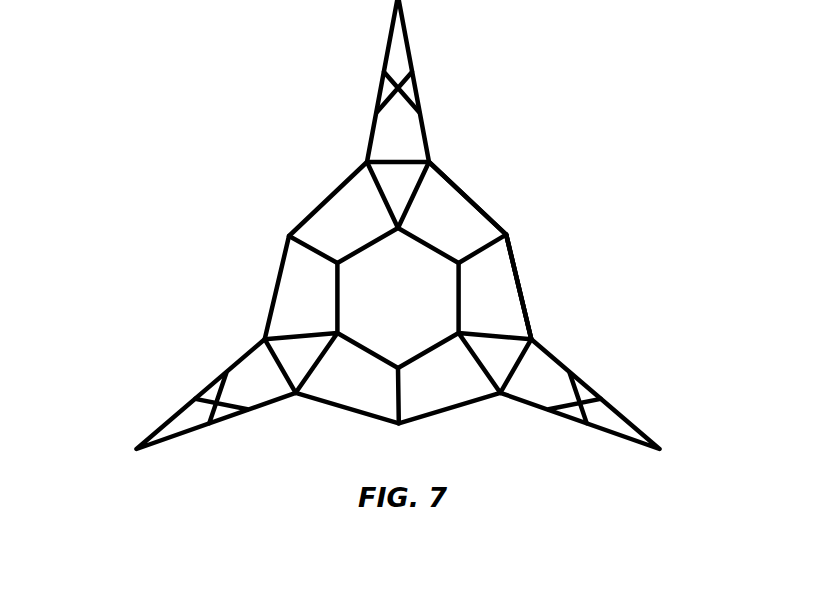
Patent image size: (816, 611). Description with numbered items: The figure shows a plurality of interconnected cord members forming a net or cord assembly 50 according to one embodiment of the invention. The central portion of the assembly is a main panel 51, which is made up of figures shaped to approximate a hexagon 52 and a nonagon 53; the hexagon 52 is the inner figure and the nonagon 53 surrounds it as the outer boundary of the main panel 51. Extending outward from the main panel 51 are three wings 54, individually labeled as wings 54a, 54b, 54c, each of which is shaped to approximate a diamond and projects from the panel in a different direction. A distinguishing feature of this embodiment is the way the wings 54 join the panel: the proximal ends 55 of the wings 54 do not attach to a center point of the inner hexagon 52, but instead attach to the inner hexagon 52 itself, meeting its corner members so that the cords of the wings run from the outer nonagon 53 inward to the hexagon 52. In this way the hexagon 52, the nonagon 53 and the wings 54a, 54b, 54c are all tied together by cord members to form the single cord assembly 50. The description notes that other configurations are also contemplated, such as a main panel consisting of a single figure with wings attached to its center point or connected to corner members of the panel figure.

The net or cord assembly 50 is at (159, 188).
The main panel 51 is at (552, 251).
The hexagon (inner figure) 52 is at (428, 246).
The nonagon 53 is at (527, 305).
The wings 54 is at (406, 224).
The first wing 54a is at (407, 40).
The second wing 54b is at (642, 427).
The third wing 54c is at (158, 427).
The proximal ends of the wings 55 is at (336, 332).